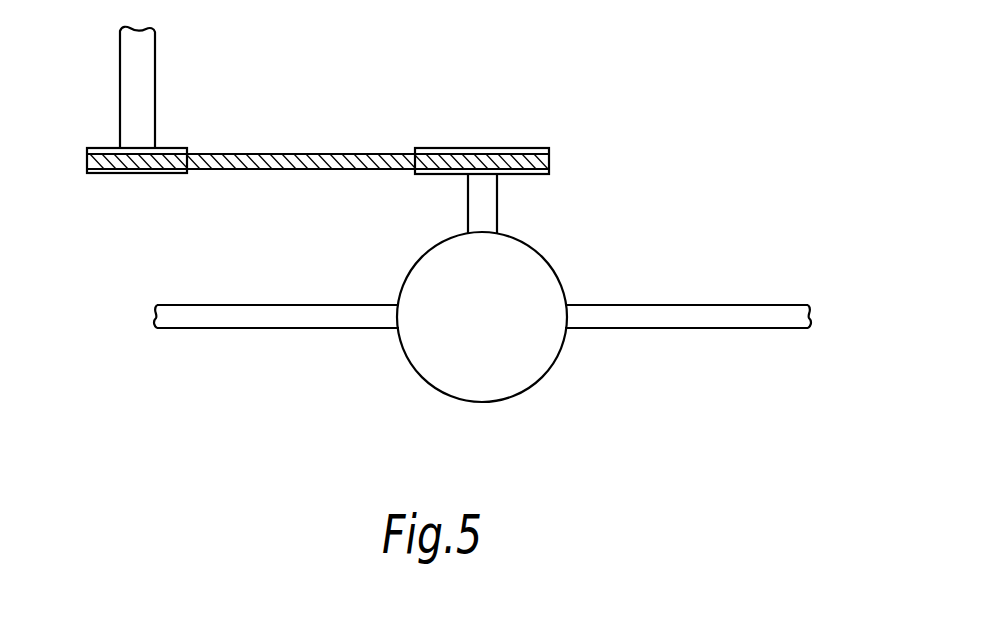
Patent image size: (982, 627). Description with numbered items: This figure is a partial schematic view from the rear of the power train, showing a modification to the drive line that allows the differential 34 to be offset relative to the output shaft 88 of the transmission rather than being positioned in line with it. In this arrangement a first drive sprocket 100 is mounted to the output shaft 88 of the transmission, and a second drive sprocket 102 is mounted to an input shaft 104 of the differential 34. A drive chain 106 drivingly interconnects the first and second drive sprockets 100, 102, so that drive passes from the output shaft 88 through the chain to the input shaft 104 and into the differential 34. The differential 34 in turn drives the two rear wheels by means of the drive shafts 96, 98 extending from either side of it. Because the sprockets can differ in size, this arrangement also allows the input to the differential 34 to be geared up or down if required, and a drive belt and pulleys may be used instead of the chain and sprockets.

The differential 34 is at (520, 370).
The output shaft 88 is at (128, 75).
The drive shaft 96 is at (722, 322).
The drive shaft 98 is at (253, 322).
The first drive sprocket 100 is at (108, 174).
The second drive sprocket 102 is at (533, 175).
The input shaft 104 is at (485, 205).
The drive chain 106 is at (332, 158).